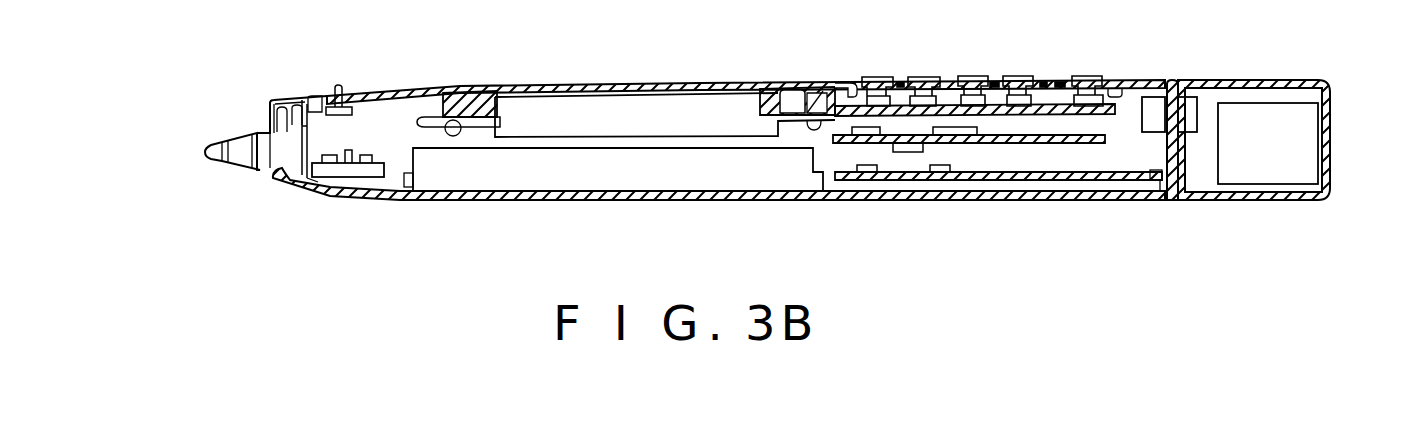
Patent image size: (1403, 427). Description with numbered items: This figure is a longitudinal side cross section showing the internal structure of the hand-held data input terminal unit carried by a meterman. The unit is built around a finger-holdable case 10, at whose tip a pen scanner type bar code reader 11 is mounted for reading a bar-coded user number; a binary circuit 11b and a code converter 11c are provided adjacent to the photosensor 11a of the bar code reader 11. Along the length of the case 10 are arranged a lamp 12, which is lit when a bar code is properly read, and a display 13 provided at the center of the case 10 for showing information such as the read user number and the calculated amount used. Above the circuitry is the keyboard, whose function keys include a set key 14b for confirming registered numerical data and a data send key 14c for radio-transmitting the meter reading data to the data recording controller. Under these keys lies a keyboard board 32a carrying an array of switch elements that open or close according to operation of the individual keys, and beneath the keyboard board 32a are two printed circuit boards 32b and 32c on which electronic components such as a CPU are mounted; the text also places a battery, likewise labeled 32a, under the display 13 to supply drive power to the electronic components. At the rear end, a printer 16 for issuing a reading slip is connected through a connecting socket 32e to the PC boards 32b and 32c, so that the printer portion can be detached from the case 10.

The case 10 is at (480, 92).
The pen scanner type bar code reader 11 is at (252, 182).
The photosensor 11a is at (218, 158).
The binary circuit 11b is at (333, 172).
The code converter 11c is at (333, 177).
The lamp 12 is at (343, 88).
The display 13 is at (643, 108).
The set key 14b is at (878, 80).
The data send key 14c is at (1097, 78).
The printer 16 is at (1303, 130).
The keyboard board 32a is at (600, 175).
The printed circuit board 32b is at (1093, 147).
The printed circuit board 32c is at (973, 183).
The connecting socket 32e is at (1156, 108).